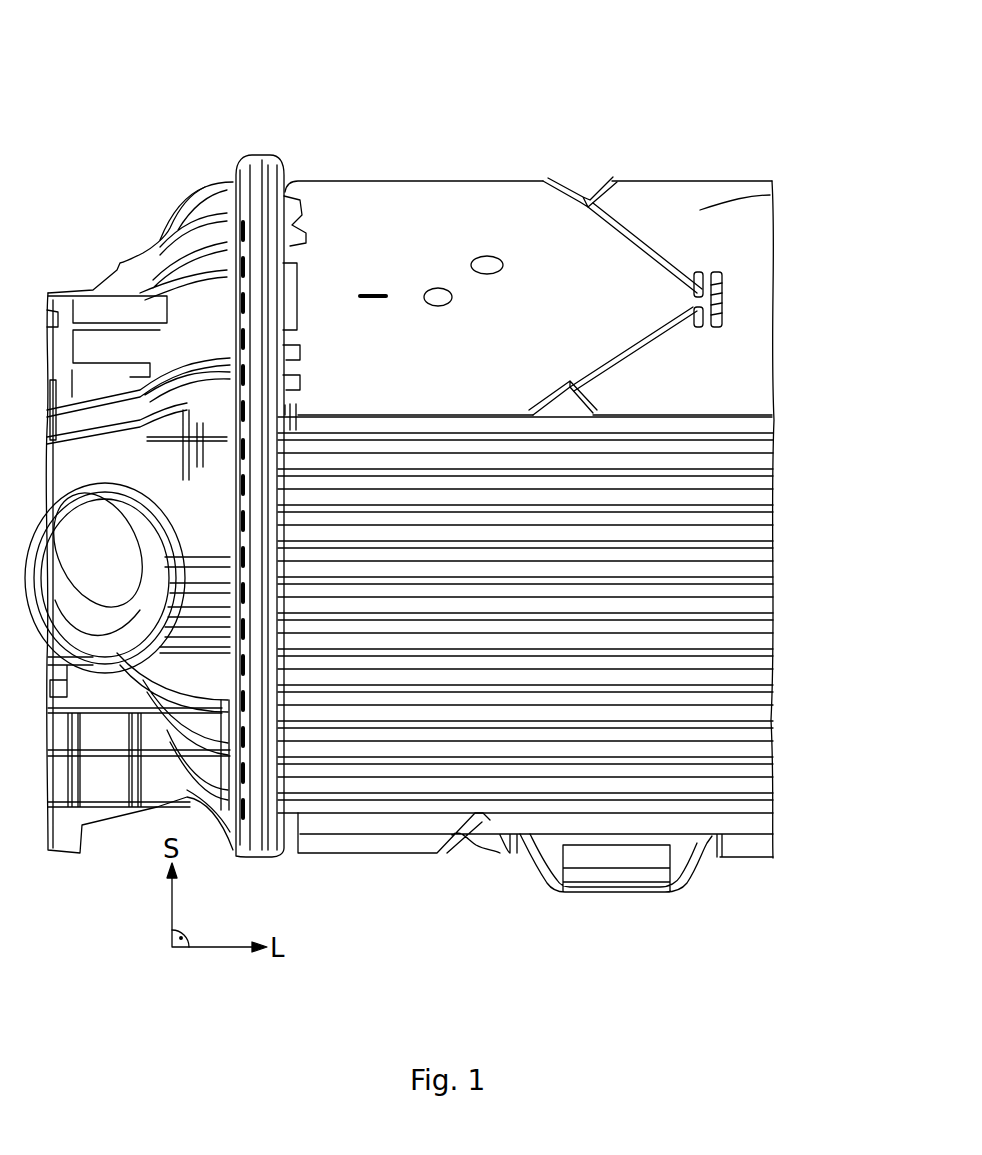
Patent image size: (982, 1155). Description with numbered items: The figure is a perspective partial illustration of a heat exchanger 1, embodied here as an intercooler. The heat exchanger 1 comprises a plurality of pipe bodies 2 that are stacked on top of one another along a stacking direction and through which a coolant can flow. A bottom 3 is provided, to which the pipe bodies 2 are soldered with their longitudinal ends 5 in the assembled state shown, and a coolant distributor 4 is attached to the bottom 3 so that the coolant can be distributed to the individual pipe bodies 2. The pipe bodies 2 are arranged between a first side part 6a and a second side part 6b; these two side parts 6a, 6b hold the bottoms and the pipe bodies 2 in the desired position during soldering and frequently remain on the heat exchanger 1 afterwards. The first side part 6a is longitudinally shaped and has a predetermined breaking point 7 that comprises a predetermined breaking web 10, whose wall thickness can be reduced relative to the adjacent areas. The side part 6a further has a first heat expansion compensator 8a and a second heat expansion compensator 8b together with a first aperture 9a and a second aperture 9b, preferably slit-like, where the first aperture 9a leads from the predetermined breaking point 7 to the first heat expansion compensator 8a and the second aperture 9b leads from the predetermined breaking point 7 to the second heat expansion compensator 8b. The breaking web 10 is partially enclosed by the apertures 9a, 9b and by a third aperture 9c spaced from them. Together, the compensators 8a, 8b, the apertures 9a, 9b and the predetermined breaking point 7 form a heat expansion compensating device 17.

The heat exchanger 1 is at (818, 148).
The pipe bodies 2 is at (778, 446).
The bottom 3 is at (262, 168).
The coolant distributor 4 is at (137, 272).
The longitudinal ends 5 is at (312, 516).
The first side part 6a is at (486, 172).
The second side part 6b is at (366, 868).
The predetermined breaking point 7 is at (747, 286).
The first heat expansion compensator 8a is at (592, 173).
The second heat expansion compensator 8b is at (526, 386).
The first aperture 9a is at (612, 238).
The second aperture 9b is at (633, 342).
The third aperture 9c is at (722, 272).
The predetermined breaking web 10 is at (722, 300).
The heat expansion compensating device 17 is at (698, 212).